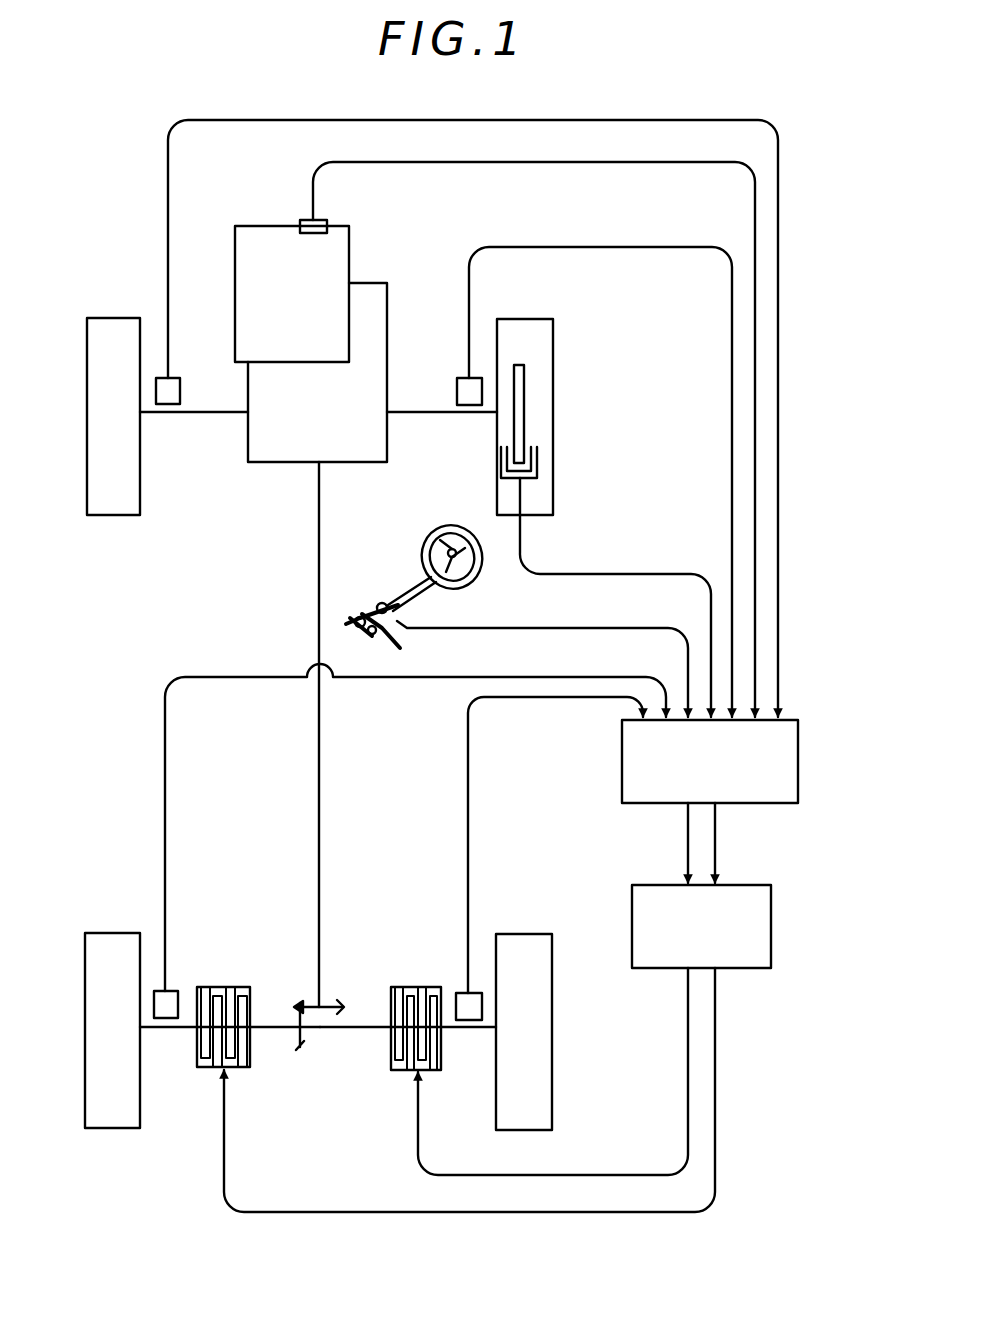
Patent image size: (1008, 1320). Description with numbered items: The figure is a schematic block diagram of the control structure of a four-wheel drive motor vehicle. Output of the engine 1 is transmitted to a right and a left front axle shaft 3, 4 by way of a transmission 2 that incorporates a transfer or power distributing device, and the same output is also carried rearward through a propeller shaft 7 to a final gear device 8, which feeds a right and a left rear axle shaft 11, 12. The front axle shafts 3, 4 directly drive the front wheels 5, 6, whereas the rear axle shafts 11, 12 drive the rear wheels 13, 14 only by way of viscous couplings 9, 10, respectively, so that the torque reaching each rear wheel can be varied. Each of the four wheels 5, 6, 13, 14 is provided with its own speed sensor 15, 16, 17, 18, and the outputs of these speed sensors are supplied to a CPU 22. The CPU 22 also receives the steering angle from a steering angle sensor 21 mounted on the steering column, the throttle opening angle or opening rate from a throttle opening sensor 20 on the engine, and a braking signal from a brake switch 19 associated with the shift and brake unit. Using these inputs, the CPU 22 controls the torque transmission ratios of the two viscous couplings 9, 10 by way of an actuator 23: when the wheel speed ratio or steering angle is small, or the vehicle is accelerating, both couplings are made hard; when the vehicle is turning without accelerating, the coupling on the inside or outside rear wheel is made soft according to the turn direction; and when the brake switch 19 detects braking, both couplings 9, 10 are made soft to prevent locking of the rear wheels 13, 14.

The engine 1 is at (350, 250).
The transmission 2 is at (388, 312).
The axle shaft 3 is at (196, 416).
The axle shaft 4 is at (427, 416).
The wheel 5 is at (105, 325).
The wheel 6 is at (553, 337).
The propeller shaft 7 is at (321, 800).
The final gear device 8 is at (317, 1043).
The viscous coupling 9 is at (225, 987).
The viscous coupling 10 is at (417, 987).
The axle shaft 11 is at (272, 1030).
The axle shaft 12 is at (357, 1025).
The wheel 13 is at (105, 932).
The wheel 14 is at (540, 934).
The speed sensor 15 is at (180, 386).
The speed sensor 16 is at (456, 394).
The speed sensor 17 is at (171, 991).
The speed sensor 18 is at (476, 993).
The brake switch 19 is at (528, 480).
The throttle opening sensor 20 is at (305, 222).
The steering angle sensor 21 is at (400, 622).
The CPU 22 is at (800, 757).
The actuator 23 is at (772, 925).